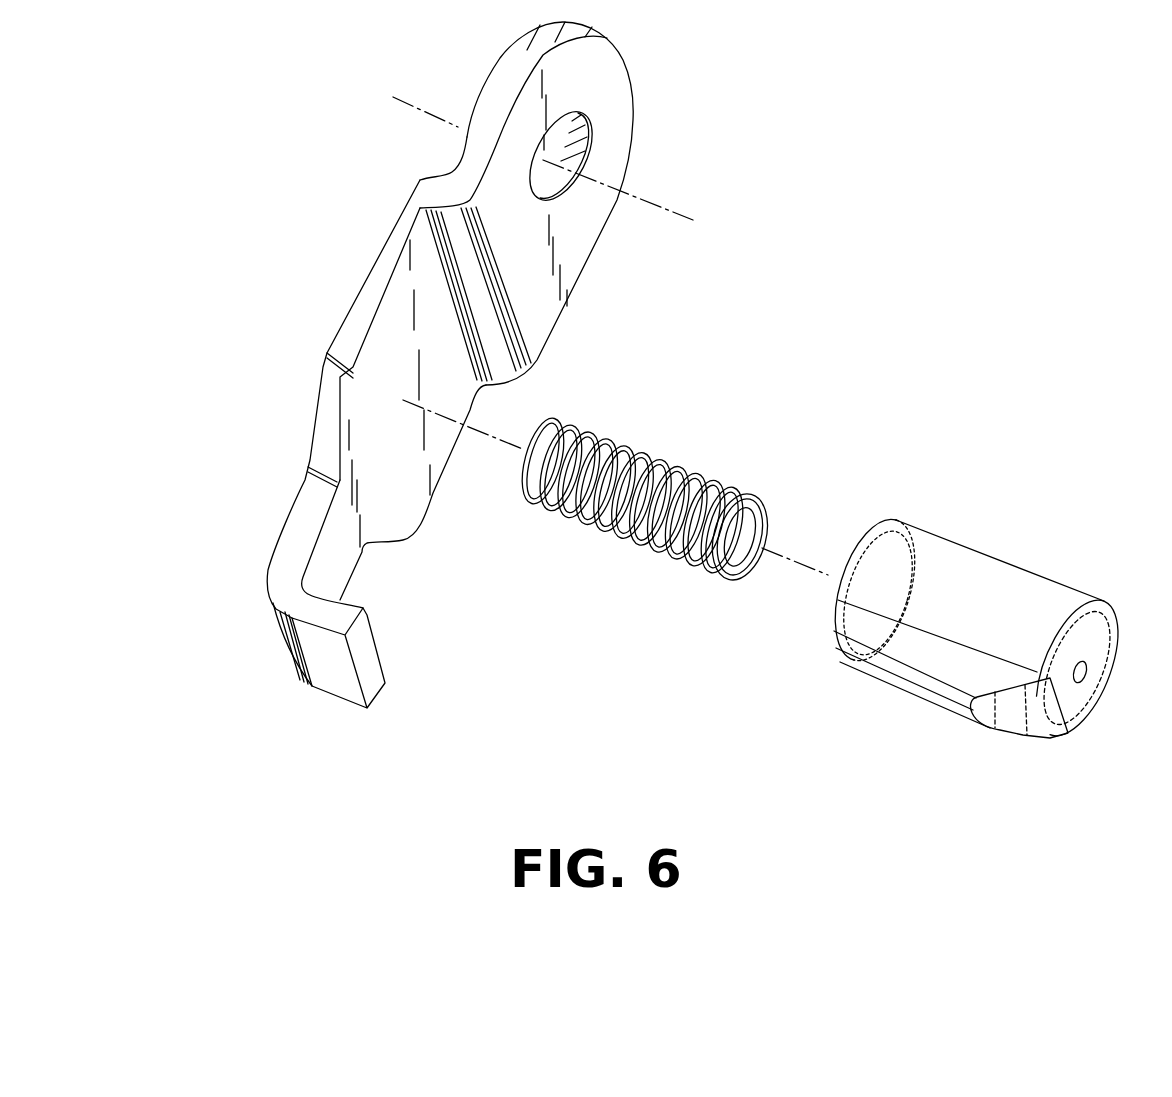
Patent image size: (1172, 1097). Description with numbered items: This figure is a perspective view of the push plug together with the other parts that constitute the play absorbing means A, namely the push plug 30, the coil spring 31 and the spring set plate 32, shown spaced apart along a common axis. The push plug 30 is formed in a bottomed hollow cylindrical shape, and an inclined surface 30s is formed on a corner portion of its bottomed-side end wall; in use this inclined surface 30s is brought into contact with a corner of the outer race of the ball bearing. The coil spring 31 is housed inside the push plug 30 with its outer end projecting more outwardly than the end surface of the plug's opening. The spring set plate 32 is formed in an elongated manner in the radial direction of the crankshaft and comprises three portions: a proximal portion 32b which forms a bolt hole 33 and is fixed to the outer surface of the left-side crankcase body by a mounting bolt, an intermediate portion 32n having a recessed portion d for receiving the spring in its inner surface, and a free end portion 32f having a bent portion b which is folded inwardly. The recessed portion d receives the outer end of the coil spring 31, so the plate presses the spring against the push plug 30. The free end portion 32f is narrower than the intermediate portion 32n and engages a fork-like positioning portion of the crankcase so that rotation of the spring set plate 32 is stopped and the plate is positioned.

The play absorbing means A is at (868, 344).
The push plug 30 is at (967, 567).
The inclined surface 30s is at (1037, 723).
The coil spring 31 is at (609, 532).
The spring set plate 32 is at (580, 289).
The proximal portion 32b is at (467, 137).
The intermediate portion 32n is at (352, 288).
The free end portion 32f is at (323, 655).
The bolt hole 33 is at (565, 152).
The recessed portion for receiving spring d is at (447, 440).
The bent portion b is at (340, 690).